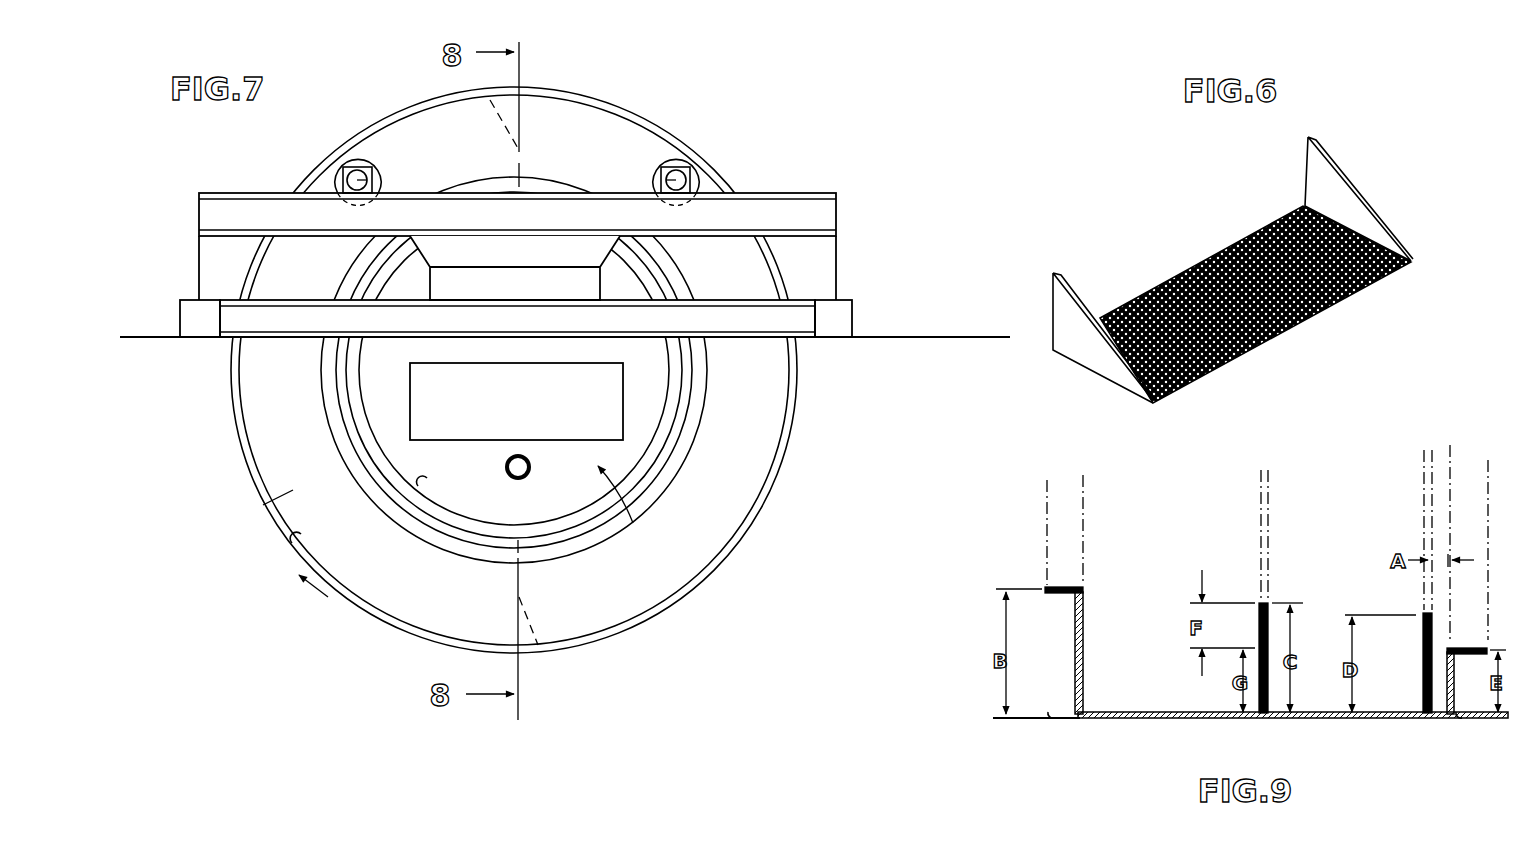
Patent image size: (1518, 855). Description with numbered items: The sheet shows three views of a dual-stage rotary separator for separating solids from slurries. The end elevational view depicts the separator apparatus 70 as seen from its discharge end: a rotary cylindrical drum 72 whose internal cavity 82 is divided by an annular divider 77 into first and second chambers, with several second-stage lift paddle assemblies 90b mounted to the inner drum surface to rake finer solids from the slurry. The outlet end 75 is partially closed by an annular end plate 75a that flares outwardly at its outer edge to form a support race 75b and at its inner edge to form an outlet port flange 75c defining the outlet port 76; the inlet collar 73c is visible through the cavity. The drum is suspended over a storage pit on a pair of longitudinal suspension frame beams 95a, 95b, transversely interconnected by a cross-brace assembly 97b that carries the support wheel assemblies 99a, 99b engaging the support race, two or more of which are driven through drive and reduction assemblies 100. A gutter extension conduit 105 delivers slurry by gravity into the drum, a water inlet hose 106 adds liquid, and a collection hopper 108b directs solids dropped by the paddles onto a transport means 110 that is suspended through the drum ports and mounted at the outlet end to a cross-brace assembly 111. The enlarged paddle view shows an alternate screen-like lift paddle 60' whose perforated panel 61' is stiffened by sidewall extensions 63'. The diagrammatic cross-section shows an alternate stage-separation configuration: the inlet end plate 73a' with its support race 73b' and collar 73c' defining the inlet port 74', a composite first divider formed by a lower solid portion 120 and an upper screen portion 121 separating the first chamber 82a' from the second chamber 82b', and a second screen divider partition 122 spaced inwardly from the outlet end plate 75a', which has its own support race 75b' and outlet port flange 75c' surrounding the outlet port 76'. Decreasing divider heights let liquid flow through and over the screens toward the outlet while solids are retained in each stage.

In FIG. 7, the separator apparatus 70 is at (678, 90).
In FIG. 7, the rotary cylindrical drum 72 is at (368, 613).
In FIG. 7, the inlet collar portion 73c is at (372, 496).
In FIG. 7, the outlet end 75 is at (483, 550).
In FIG. 7, the outlet annular end plate 75a is at (251, 503).
In FIG. 7, the outlet support race 75b is at (270, 549).
In FIG. 7, the outlet port flange 75c is at (492, 370).
In FIG. 7, the outlet port 76 is at (630, 508).
In FIG. 7, the annular divider 77 is at (388, 471).
In FIG. 7, the internal cavity 82 is at (489, 478).
In FIG. 7, the second-stage lift paddle assemblies 90b is at (245, 428).
In FIG. 7, the first suspension frame beam 95a is at (193, 315).
In FIG. 7, the second suspension frame beam 95b is at (836, 313).
In FIG. 7, the cross-brace assembly 97b is at (817, 223).
In FIG. 7, the outlet support wheel assembly 99a is at (346, 162).
In FIG. 7, the outlet support wheel assembly 99b is at (692, 158).
In FIG. 7, the drive and reduction assembly 100 is at (372, 179).
In FIG. 7, the gutter extension conduit 105 is at (499, 414).
In FIG. 7, the water inlet hose 106 is at (530, 473).
In FIG. 7, the second collection hopper 108b is at (601, 246).
In FIG. 7, the transport means 110 is at (530, 296).
In FIG. 7, the outlet cross-brace assembly 111 is at (737, 314).
In FIG. 6, the screen-like lift paddle 60' is at (1150, 226).
In FIG. 6, the perforated shelf panel 61' is at (1255, 304).
In FIG. 6, the sidewall extensions 63' is at (1214, 270).
In FIG. 9, the inlet port 74' is at (1220, 619).
In FIG. 9, the inlet annular end plate 73a' is at (1037, 653).
In FIG. 9, the inlet support race 73b' is at (1075, 735).
In FIG. 9, the inlet collar portion 73c' is at (1040, 612).
In FIG. 9, the first inner cavity chamber 82a' is at (1156, 532).
In FIG. 9, the second inner cavity chamber 82b' is at (1347, 532).
In FIG. 9, the lower solid portion 120 is at (1268, 696).
In FIG. 9, the upper screen portion 121 is at (1259, 631).
In FIG. 9, the second annular divider partition 122 is at (1422, 685).
In FIG. 9, the outlet end plate 75a' is at (1436, 699).
In FIG. 9, the outlet support race 75b' is at (1471, 738).
In FIG. 9, the outlet port flange 75c' is at (1472, 631).
In FIG. 9, the outlet port 76' is at (1483, 582).